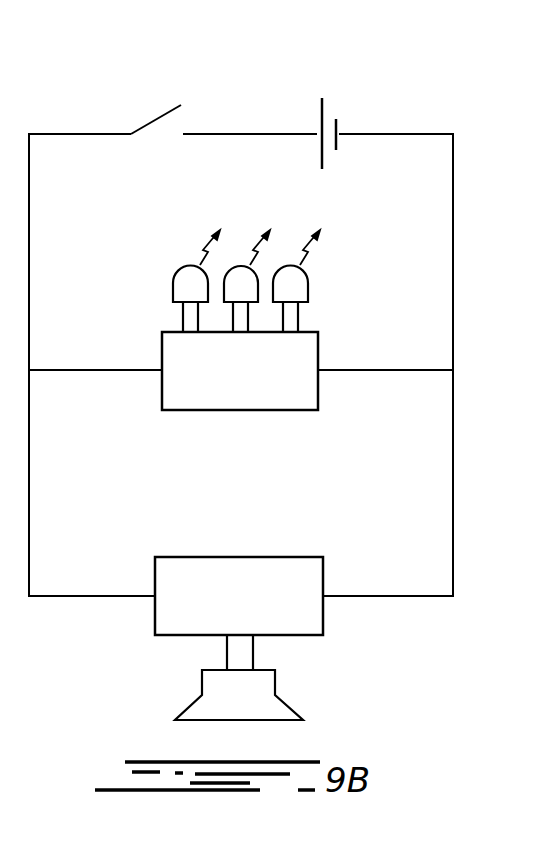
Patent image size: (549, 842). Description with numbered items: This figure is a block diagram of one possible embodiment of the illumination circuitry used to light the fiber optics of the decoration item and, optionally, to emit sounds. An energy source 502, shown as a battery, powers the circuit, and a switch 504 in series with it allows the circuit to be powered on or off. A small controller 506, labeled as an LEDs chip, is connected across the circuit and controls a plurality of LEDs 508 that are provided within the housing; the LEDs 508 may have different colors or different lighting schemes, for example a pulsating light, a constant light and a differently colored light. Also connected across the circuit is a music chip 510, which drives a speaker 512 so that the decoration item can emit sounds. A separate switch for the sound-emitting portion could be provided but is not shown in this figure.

The energy source 502 is at (327, 126).
The switch 504 is at (158, 118).
The controller 506 is at (304, 345).
The LEDs 508 is at (173, 289).
The music chip 510 is at (295, 567).
The speaker 512 is at (267, 701).